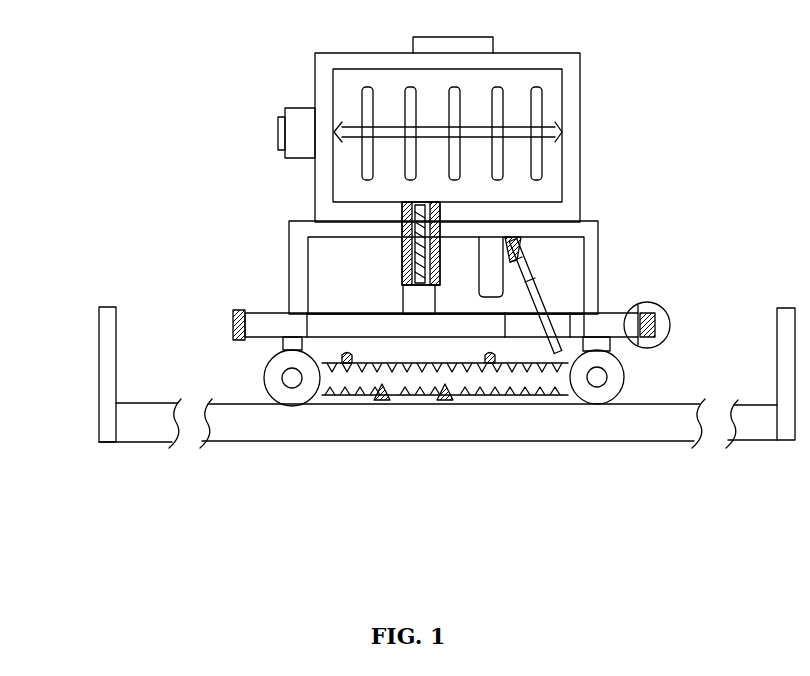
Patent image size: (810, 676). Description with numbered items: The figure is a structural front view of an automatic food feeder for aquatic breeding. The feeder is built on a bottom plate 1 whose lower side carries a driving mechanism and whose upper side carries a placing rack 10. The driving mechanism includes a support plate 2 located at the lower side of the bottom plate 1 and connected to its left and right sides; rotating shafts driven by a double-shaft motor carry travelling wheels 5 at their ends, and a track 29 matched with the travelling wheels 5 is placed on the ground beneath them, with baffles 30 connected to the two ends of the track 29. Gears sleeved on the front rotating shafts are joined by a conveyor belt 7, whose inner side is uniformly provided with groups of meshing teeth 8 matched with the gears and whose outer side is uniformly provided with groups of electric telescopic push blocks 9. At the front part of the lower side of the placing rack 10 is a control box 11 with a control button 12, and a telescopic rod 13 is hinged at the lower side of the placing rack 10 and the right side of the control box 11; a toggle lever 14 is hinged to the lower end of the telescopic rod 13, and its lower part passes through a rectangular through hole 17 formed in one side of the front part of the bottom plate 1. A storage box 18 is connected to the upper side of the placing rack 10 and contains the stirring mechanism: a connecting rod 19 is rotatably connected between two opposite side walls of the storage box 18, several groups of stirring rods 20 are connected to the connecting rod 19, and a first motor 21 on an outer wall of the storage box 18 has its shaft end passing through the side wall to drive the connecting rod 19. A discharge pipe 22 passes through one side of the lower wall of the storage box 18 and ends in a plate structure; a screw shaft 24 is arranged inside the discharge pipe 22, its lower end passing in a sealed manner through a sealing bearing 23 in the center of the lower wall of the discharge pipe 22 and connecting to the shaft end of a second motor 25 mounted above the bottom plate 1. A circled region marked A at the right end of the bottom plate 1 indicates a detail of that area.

The bottom plate 1 is at (605, 316).
The support plate 2 is at (283, 347).
The travelling wheel 5 is at (272, 398).
The conveyor belt 7 is at (395, 401).
The meshing teeth 8 is at (445, 401).
The electric telescopic push block 9 is at (530, 405).
The placing rack 10 is at (289, 293).
The control box 11 is at (493, 252).
The control button 12 is at (513, 267).
The telescopic rod 13 is at (520, 247).
The toggle lever 14 is at (533, 297).
The rectangular through hole 17 is at (560, 343).
The storage box 18 is at (576, 106).
The connecting rod 19 is at (360, 127).
The stirring rod 20 is at (367, 90).
The first motor 21 is at (297, 135).
The discharge pipe 22 is at (415, 250).
The sealing bearing 23 is at (402, 303).
The screw shaft 24 is at (413, 280).
The second motor 25 is at (402, 228).
The track 29 is at (148, 425).
The baffle 30 is at (98, 349).
The detail A is at (668, 325).